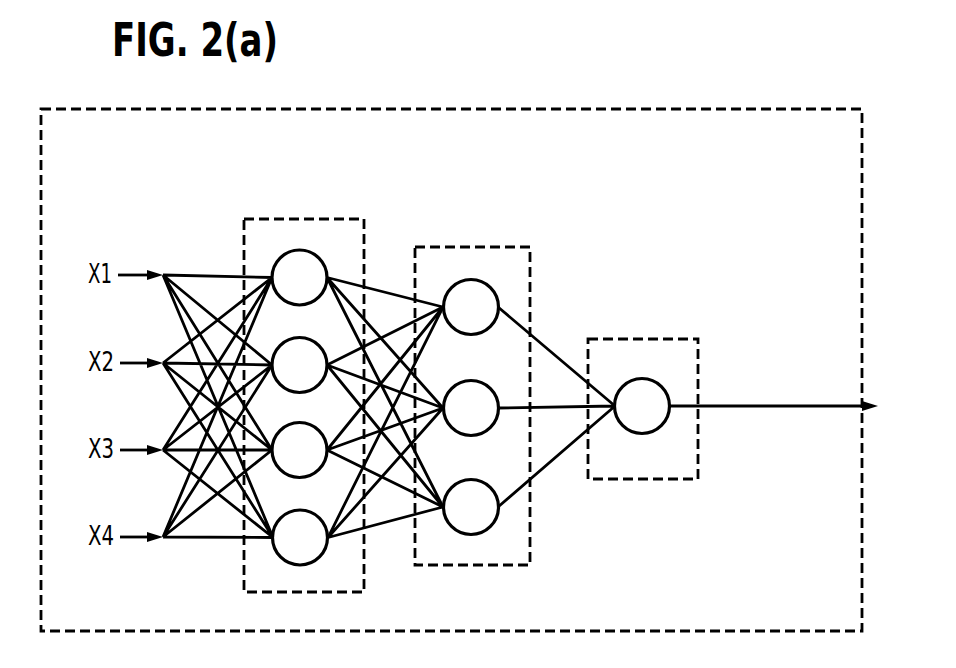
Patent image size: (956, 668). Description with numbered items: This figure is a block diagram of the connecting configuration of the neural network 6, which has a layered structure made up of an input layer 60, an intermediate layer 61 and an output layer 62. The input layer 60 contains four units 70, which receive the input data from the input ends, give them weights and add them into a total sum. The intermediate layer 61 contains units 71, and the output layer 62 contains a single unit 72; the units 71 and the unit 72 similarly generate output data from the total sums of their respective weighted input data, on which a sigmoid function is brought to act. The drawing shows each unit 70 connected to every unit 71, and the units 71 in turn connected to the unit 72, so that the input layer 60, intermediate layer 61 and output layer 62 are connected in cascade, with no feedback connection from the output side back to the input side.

The neural network 6 is at (453, 108).
The input layer 60 is at (382, 180).
The intermediate layer 61 is at (475, 247).
The output layer 62 is at (628, 339).
The units 70 is at (323, 270).
The units 71 is at (498, 300).
The unit 72 is at (668, 395).